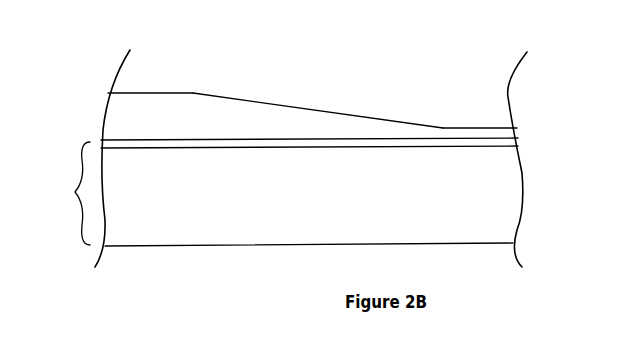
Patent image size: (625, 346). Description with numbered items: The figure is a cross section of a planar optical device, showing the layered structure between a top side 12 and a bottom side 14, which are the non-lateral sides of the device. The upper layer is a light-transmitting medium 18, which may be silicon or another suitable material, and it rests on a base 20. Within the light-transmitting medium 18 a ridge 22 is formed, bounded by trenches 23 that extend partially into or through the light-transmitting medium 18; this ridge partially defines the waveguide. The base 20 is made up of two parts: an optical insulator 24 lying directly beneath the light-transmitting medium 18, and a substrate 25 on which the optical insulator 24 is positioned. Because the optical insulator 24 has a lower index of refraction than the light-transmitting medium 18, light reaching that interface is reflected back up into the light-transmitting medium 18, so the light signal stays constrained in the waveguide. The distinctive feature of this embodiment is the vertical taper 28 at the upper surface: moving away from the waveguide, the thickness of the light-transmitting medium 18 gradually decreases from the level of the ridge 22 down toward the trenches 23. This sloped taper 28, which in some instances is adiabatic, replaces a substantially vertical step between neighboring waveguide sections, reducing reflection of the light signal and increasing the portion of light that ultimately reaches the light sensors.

The top side 12 is at (344, 54).
The bottom side 14 is at (212, 306).
The light-transmitting medium 18 is at (243, 117).
The base 20 is at (71, 193).
The ridge 22 is at (160, 93).
The trenches 23 is at (487, 128).
The optical insulator 24 is at (173, 143).
The substrate 25 is at (125, 228).
The vertical taper 28 is at (322, 108).